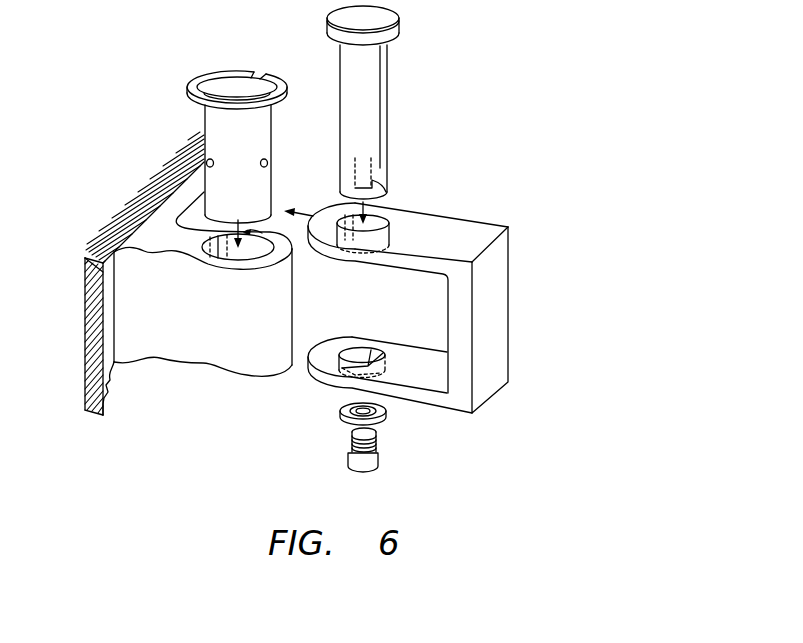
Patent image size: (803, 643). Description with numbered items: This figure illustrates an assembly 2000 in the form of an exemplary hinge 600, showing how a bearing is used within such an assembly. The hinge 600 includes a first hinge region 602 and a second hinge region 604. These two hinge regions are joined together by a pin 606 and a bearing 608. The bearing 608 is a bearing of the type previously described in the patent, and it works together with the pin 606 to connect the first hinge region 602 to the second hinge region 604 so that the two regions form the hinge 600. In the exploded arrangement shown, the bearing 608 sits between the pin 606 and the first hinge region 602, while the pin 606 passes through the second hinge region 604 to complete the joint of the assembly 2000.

The assembly 2000 is at (612, 49).
The hinge 600 is at (523, 103).
The first hinge region 602 is at (117, 220).
The second hinge region 604 is at (510, 262).
The pin 606 is at (378, 103).
The bearing 608 is at (202, 138).